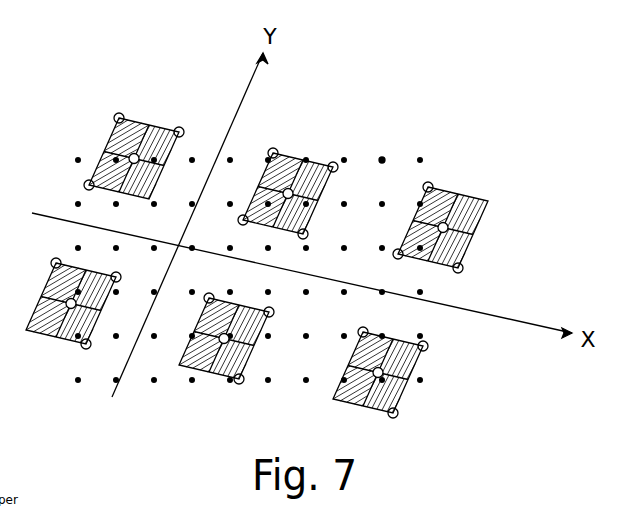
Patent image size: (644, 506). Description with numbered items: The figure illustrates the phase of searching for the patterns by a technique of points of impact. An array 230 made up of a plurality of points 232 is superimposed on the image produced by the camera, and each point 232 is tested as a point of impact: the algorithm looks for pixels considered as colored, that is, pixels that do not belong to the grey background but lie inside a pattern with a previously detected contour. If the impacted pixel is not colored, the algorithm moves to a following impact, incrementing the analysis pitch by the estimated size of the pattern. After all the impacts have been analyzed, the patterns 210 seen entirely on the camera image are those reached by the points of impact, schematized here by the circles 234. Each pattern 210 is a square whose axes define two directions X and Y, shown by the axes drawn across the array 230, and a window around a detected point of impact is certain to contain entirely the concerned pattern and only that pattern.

The unit cell / pixel element 210 is at (305, 138).
The array of grid points 230 is at (427, 152).
The grid point 232 is at (383, 158).
The corner marker 234 is at (239, 213).